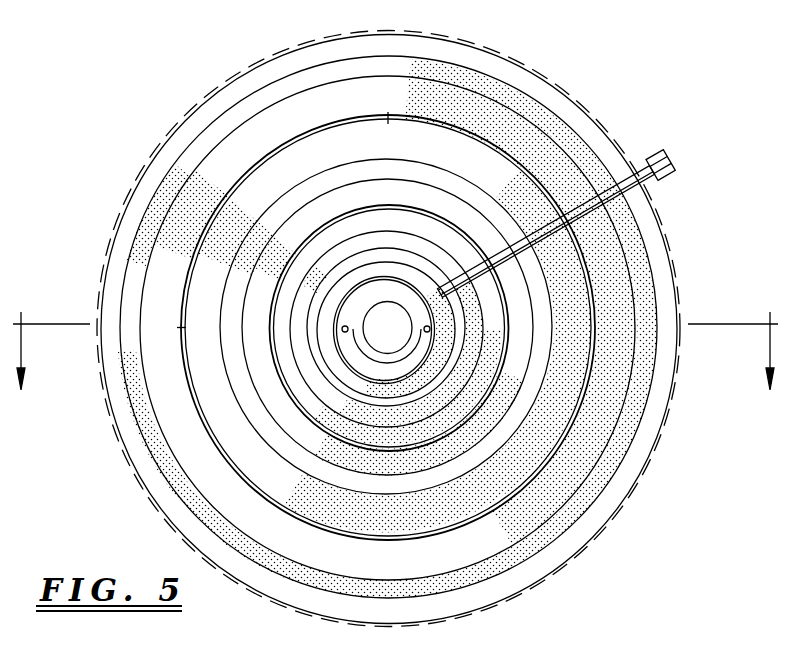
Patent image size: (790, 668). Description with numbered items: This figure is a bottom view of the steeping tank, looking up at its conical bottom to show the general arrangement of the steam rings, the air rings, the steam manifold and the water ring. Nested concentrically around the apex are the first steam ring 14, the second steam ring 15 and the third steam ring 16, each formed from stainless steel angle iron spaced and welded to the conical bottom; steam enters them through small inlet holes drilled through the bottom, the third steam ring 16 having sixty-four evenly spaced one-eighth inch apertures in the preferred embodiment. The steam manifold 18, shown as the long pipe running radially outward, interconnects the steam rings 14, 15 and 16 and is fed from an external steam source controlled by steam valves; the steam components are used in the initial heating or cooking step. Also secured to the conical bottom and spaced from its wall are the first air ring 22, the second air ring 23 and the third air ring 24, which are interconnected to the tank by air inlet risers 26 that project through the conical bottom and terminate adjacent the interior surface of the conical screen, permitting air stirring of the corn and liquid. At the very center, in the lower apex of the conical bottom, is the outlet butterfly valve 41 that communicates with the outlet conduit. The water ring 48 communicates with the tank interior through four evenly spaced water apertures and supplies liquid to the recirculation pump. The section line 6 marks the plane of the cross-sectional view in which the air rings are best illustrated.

The section line 6- 6 is at (395, 364).
The first steam ring 14 is at (366, 391).
The second steam ring 15 is at (262, 438).
The third steam ring 16 is at (182, 478).
The steam manifold 18 is at (653, 183).
The first air ring 22 is at (358, 348).
The second air ring 23 is at (348, 443).
The third air ring 24 is at (276, 500).
The air inlet risers 26 is at (252, 175).
The outlet butterfly valve 41 is at (396, 324).
The water ring 48 is at (362, 417).